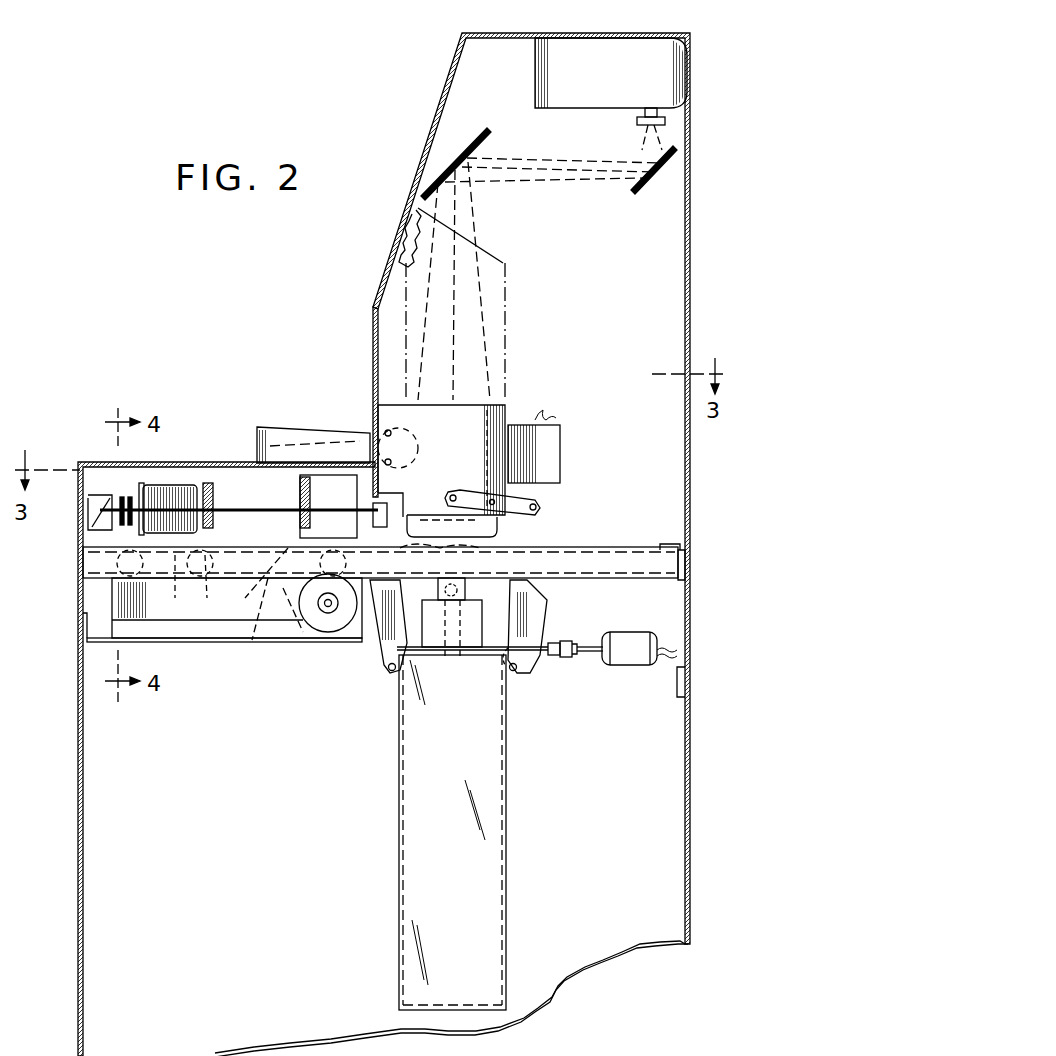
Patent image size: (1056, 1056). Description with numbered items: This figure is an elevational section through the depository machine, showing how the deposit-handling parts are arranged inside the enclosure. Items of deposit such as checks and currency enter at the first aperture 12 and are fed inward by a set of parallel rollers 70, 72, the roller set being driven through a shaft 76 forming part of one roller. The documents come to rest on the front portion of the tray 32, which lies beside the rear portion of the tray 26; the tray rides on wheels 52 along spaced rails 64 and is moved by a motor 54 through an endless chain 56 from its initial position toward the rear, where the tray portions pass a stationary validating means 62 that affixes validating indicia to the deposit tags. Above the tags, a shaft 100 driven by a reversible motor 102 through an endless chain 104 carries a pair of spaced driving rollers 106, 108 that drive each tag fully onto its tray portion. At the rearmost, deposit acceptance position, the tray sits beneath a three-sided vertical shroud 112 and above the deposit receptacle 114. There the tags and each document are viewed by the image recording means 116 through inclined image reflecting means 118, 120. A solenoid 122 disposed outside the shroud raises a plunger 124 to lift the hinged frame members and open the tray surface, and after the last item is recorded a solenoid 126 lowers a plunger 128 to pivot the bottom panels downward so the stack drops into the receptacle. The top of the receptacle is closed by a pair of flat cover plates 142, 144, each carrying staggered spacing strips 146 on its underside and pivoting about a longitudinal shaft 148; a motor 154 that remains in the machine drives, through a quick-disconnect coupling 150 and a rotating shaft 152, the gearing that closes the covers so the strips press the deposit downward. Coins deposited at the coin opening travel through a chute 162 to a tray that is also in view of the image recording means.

The first aperture 12 is at (373, 437).
The rear portion of the tray 26 is at (253, 580).
The front portion of the tray 32 is at (171, 584).
The wheels 52 is at (201, 586).
The motor 54 is at (324, 620).
The endless chain 56 is at (262, 640).
The stationary validating means 62 is at (342, 500).
The rails 64 is at (97, 565).
The roller 70 is at (409, 448).
The roller 72 is at (400, 465).
The shaft 76 is at (392, 433).
The shaft 100 is at (246, 508).
The reversible motor 102 is at (182, 490).
The endless chain 104 is at (118, 497).
The driving roller 106 is at (300, 488).
The driving roller 108 is at (208, 482).
The three-sided vertical shroud 112 is at (506, 405).
The deposit receptacle 114 is at (497, 832).
The image recording means 116 is at (607, 85).
The inclined image reflecting means 118 is at (648, 190).
The inclined image reflecting means 120 is at (474, 138).
The solenoid 122 is at (466, 648).
The plunger 124 is at (500, 567).
The solenoid 126 is at (553, 447).
The plunger 128 is at (482, 528).
The cover plate 142 is at (546, 620).
The cover plate 144 is at (370, 658).
The spacing strips 146 is at (396, 660).
The longitudinal shaft 148 is at (388, 672).
The coupling 150 is at (562, 658).
The rotating shaft 152 is at (536, 660).
The motor 154 is at (634, 644).
The chute 162 is at (405, 246).